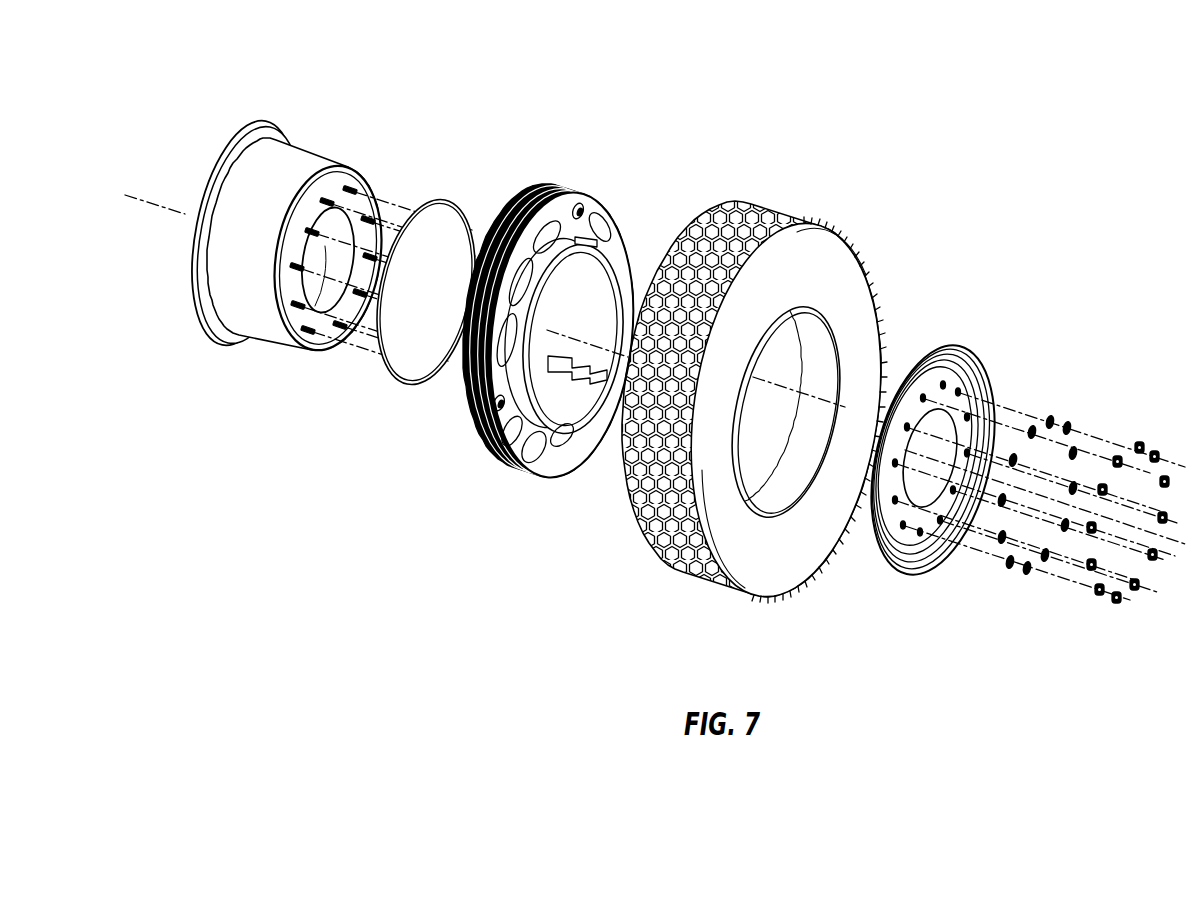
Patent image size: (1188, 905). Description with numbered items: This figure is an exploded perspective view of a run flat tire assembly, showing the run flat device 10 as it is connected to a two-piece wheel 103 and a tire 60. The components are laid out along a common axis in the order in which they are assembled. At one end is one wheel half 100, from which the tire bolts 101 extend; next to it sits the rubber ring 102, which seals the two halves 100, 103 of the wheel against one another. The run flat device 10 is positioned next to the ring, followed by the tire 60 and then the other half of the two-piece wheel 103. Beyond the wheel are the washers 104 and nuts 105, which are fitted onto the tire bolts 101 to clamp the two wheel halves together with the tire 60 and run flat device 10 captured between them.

The run flat device 10 is at (645, 163).
The tire 60 is at (788, 202).
The wheel half 100 is at (238, 105).
The tire bolts 101 is at (378, 196).
The rubber ring 102 is at (447, 200).
The wheel 103 is at (992, 325).
The washers 104 is at (1050, 416).
The nuts 105 is at (1140, 444).